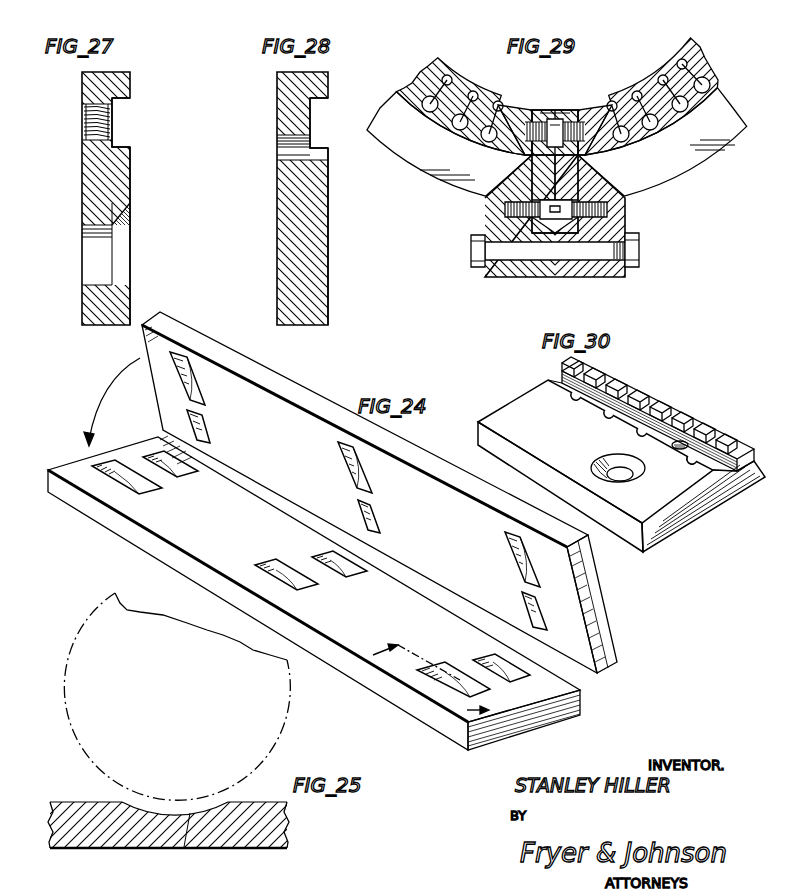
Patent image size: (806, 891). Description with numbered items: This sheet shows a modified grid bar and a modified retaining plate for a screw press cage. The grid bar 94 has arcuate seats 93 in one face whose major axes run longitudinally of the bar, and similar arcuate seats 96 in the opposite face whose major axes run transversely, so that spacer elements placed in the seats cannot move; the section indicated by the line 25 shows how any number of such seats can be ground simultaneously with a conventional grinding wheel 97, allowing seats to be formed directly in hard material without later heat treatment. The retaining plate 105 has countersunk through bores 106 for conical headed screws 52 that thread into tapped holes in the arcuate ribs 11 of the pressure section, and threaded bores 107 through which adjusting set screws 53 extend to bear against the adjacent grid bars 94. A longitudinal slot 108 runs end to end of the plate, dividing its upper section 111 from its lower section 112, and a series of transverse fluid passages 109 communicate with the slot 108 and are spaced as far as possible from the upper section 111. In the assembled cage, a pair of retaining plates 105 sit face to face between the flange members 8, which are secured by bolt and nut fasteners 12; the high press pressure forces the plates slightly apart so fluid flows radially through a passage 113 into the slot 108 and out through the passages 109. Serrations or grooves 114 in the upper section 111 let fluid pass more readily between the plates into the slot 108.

In FIG. 29, the flange member 8 is at (529, 268).
In FIG. 29, the arcuate rib 11 is at (404, 147).
In FIG. 29, the bolt and nut fastener 12 is at (598, 262).
In FIG. 24, the section line 25 is at (421, 675).
In FIG. 29, the screw connector 52 is at (505, 210).
In FIG. 29, the set screw 53 is at (540, 119).
In FIG. 24, the arcuate seat 93 is at (192, 473).
In FIG. 25, the arcuate seat 93 is at (184, 847).
In FIG. 29, the grid bar 94 is at (527, 104).
In FIG. 24, the grid bar 94 is at (605, 636).
In FIG. 25, the grid bar 94 is at (274, 827).
In FIG. 24, the arcuate seat 96 is at (512, 554).
In FIG. 25, the grinding wheel 97 is at (76, 633).
In FIG. 27, the retaining plate 105 is at (131, 172).
In FIG. 28, the retaining plate 105 is at (329, 269).
In FIG. 29, the retaining plate 105 is at (535, 168).
In FIG. 27, the countersunk through bore 106 is at (99, 275).
In FIG. 30, the countersunk through bore 106 is at (612, 462).
In FIG. 27, the threaded bore 107 is at (82, 124).
In FIG. 30, the threaded bore 107 is at (684, 440).
In FIG. 27, the longitudinal slot 108 is at (128, 105).
In FIG. 28, the longitudinal slot 108 is at (325, 104).
In FIG. 30, the longitudinal slot 108 is at (733, 478).
In FIG. 28, the transverse fluid passage 109 is at (284, 155).
In FIG. 30, the transverse fluid passage 109 is at (694, 465).
In FIG. 27, the upper section 111 is at (132, 79).
In FIG. 28, the upper section 111 is at (330, 79).
In FIG. 30, the upper section 111 is at (652, 398).
In FIG. 27, the lower section 112 is at (132, 310).
In FIG. 28, the lower section 112 is at (330, 203).
In FIG. 30, the lower section 112 is at (548, 418).
In FIG. 29, the passage 113 is at (555, 118).
In FIG. 30, the grooves 114 is at (618, 383).